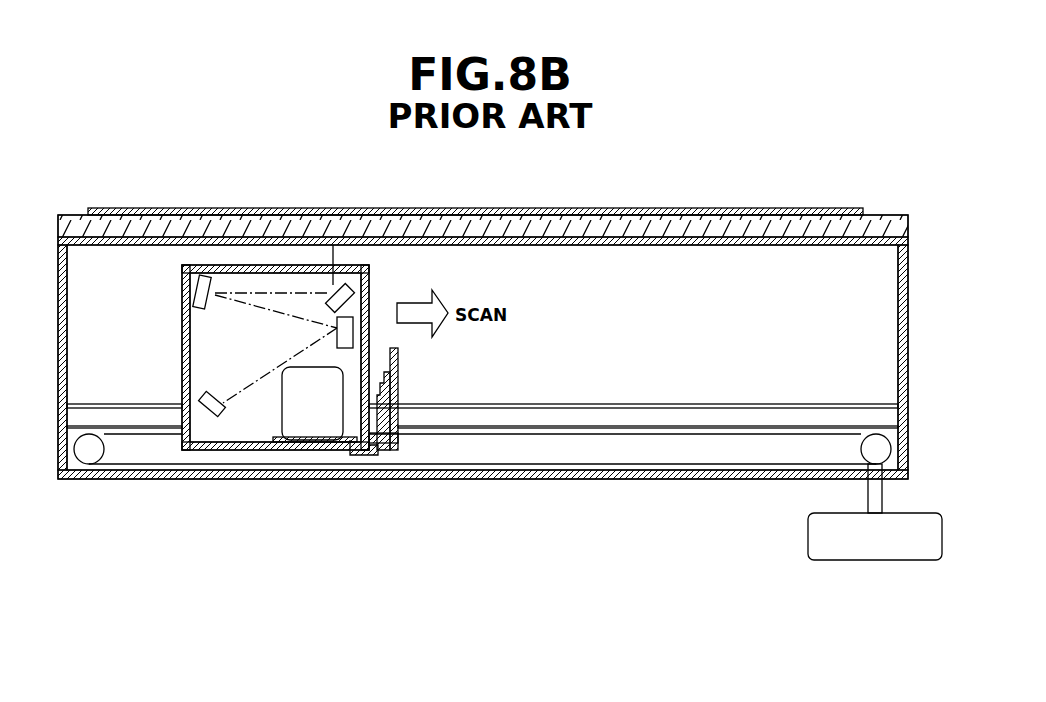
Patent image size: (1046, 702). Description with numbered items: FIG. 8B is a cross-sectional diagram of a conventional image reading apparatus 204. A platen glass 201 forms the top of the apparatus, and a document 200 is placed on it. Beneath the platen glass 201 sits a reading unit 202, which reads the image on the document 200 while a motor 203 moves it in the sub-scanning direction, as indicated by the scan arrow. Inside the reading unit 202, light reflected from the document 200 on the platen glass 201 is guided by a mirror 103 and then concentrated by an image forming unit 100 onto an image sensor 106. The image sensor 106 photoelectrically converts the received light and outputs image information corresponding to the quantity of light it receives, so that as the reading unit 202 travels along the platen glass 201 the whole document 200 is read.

The image forming unit 100 is at (317, 423).
The mirror 103 is at (207, 263).
The image sensor 106 is at (380, 446).
The document 200 is at (375, 210).
The platen glass 201 is at (490, 209).
The reading unit 202 is at (203, 451).
The motor 203 is at (875, 561).
The image reading apparatus 204 is at (482, 479).